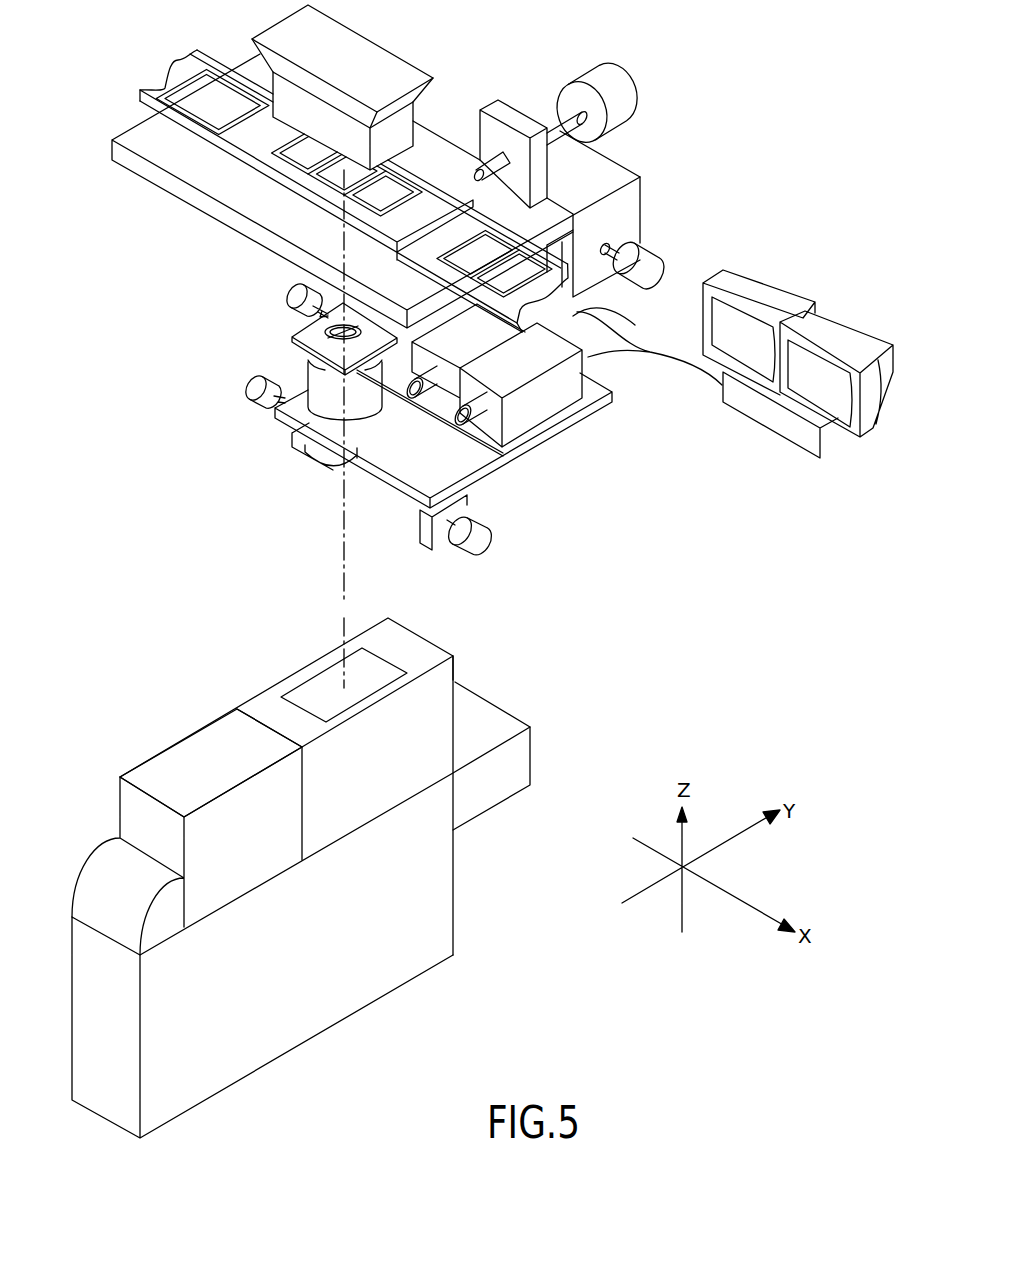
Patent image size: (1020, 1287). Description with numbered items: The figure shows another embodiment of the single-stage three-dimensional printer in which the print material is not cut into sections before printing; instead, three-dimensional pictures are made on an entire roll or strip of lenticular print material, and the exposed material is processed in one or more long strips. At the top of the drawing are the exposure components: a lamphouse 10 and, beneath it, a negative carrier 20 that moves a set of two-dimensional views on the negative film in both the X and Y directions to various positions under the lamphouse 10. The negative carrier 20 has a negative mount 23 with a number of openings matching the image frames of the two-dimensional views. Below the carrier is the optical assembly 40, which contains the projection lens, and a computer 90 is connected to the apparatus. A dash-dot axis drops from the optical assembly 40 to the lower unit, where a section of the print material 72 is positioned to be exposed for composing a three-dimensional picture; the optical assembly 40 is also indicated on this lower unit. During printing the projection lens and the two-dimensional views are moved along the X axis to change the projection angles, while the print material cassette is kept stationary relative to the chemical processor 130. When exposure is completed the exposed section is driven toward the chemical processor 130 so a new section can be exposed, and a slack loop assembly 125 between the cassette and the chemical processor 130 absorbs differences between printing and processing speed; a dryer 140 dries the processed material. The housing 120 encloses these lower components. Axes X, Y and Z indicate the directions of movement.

The lamphouse 10 is at (363, 52).
The negative carrier 20 is at (240, 200).
The negative mount 23 is at (237, 143).
The optical assembly 40 is at (468, 458).
The section of the print material 72 is at (335, 673).
The computer 90 is at (763, 412).
The housing 120 is at (98, 872).
The slack loop assembly 125 is at (175, 752).
The chemical processor 130 is at (440, 928).
The dryer 140 is at (520, 763).